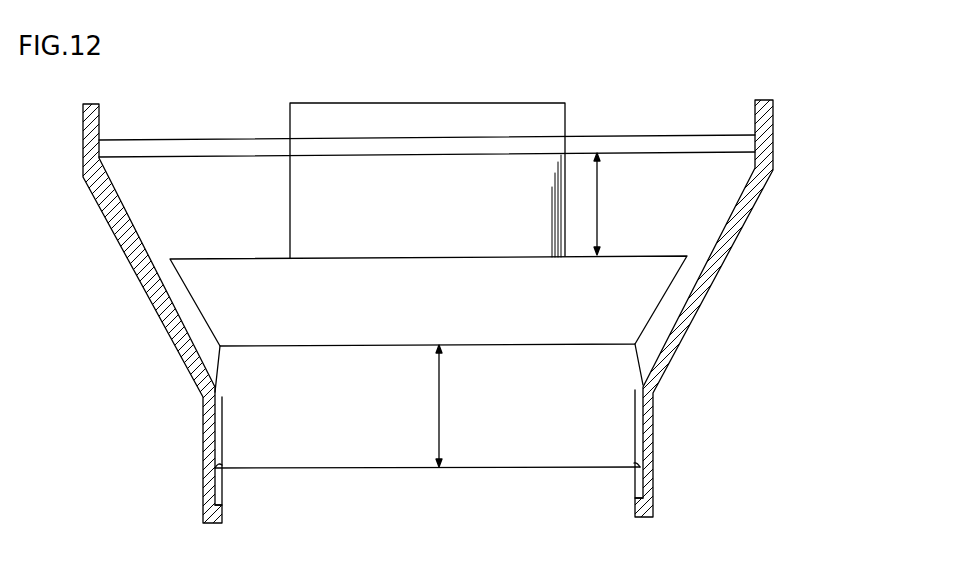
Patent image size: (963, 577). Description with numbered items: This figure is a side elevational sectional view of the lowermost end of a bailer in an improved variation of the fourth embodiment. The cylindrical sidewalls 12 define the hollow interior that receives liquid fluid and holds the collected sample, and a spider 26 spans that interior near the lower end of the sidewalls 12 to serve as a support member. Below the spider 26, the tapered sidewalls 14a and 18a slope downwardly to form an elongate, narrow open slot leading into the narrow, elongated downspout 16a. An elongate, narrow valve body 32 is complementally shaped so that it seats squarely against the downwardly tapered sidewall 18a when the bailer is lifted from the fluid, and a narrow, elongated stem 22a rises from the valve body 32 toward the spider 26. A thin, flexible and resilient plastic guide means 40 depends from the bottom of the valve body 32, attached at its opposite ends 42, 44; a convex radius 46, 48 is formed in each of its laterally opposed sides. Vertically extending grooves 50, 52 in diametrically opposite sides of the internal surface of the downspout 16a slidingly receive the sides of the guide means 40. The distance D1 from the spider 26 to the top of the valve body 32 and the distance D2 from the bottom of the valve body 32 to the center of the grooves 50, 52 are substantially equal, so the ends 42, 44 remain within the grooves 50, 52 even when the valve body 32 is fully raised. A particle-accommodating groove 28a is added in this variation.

The cylindrical sidewalls 12 is at (773, 133).
The tapered sidewall 14a is at (715, 278).
The downspout 16a is at (653, 500).
The tapered sidewall 18a is at (113, 198).
The stem 22a is at (290, 200).
The spider 26 is at (169, 139).
The particle-accommodating groove 28a is at (192, 360).
The valve body 32 is at (182, 283).
The guide means 40 is at (393, 467).
The end of guide means 42 is at (637, 345).
The end of guide means 44 is at (220, 347).
The convex radius 46 is at (642, 420).
The convex radius 48 is at (217, 442).
The vertically extending groove 50 is at (640, 463).
The vertically extending groove 52 is at (223, 468).
The distance D1 is at (598, 188).
The distance D2 is at (440, 380).